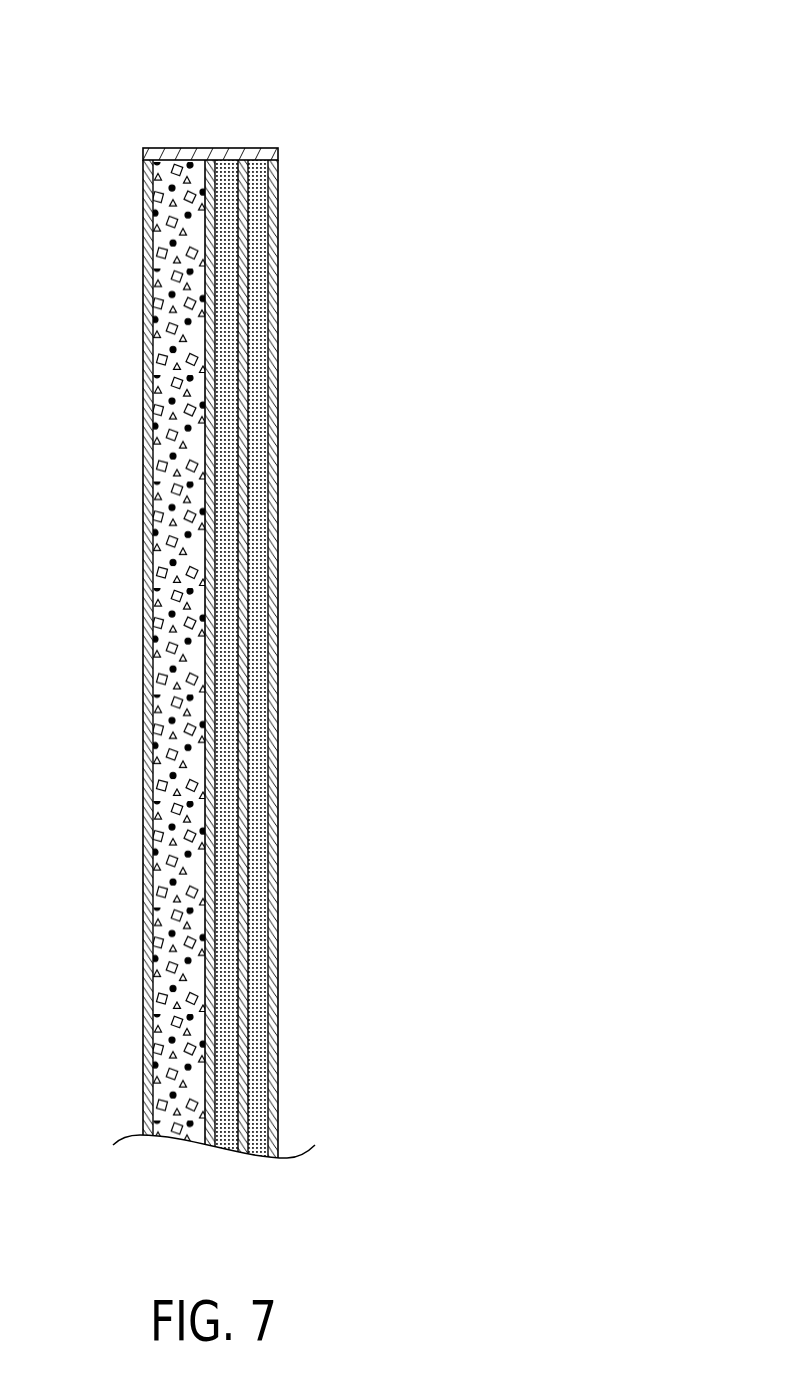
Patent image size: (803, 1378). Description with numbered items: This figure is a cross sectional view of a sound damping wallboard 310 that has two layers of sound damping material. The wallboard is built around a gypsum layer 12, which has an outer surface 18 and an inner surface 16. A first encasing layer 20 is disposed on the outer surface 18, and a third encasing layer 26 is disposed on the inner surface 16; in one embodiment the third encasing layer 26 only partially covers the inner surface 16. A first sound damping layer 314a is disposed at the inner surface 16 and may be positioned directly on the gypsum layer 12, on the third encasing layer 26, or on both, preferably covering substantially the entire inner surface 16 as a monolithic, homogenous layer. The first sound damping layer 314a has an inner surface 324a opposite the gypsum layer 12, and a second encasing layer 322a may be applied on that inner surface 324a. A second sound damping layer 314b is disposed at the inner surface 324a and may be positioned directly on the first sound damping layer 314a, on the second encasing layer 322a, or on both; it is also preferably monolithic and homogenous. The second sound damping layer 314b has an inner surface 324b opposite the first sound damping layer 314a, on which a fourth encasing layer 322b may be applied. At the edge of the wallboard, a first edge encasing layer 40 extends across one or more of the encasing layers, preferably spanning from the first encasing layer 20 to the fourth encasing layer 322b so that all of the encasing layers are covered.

The sound damping wallboard 310 is at (374, 145).
The first edge encasing layer 40 is at (195, 157).
The gypsum layer 12 is at (190, 272).
The inner surface 16 is at (205, 342).
The outer surface 18 is at (153, 543).
The first encasing layer 20 is at (148, 898).
The third encasing layer 26 is at (210, 711).
The first sound damping layer 314a is at (227, 565).
The second sound damping layer 314b is at (258, 632).
The second encasing layer 322a is at (243, 851).
The fourth encasing layer 322b is at (275, 747).
The inner surface of first sound damping layer 324a is at (240, 1039).
The inner surface of second sound damping layer 324b is at (272, 927).